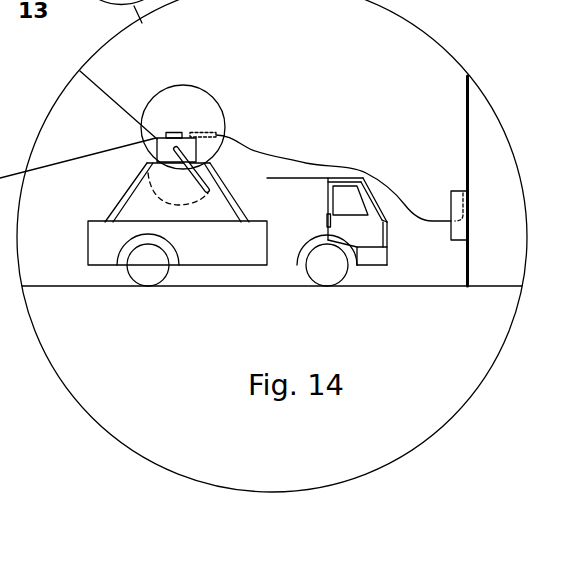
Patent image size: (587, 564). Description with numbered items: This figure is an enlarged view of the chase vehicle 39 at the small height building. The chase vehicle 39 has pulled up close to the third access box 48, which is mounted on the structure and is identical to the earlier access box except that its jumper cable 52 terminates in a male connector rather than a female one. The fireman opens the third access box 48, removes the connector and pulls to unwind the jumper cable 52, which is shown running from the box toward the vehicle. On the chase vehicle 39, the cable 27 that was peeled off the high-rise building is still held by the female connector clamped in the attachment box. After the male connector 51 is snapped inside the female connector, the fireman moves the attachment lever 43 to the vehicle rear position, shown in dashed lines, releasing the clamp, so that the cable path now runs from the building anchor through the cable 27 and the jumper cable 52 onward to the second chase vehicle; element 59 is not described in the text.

The cable 27 is at (97, 83).
The chase vehicle 39 is at (219, 243).
The attachment lever 43 is at (186, 166).
The third access box 48 is at (453, 191).
The male connector 51 is at (213, 133).
The jumper cable 52 is at (266, 152).
The support post 59 is at (499, 246).